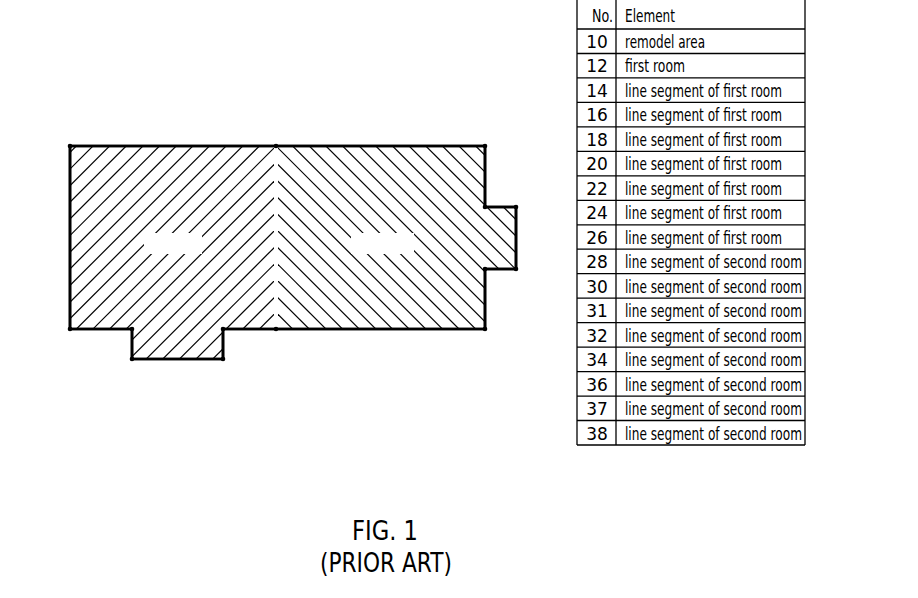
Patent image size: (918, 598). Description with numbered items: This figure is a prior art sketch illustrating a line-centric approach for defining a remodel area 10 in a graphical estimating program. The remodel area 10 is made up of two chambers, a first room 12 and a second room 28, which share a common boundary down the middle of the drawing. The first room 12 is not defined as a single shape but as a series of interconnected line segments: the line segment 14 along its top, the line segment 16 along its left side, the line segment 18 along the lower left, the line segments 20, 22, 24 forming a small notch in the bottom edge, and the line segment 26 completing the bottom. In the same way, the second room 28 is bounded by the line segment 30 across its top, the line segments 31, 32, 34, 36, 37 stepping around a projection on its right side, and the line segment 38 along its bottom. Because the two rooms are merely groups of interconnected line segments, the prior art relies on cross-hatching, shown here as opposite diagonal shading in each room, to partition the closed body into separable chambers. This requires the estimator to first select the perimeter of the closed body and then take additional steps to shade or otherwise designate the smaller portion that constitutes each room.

The remodel area 10 is at (291, 96).
The first room 12 is at (195, 114).
The line segment of first room 14 is at (113, 146).
The line segment of first room 16 is at (70, 244).
The line segment of first room 18 is at (92, 329).
The line segment of first room 20 is at (127, 342).
The line segment of first room 22 is at (177, 359).
The line segment of first room 24 is at (226, 342).
The line segment of first room 26 is at (267, 329).
The second room 28 is at (376, 114).
The line segment of second room 30 is at (437, 146).
The line segment of second room 31 is at (486, 160).
The line segment of second room 32 is at (498, 207).
The line segment of second room 34 is at (516, 250).
The line segment of second room 36 is at (503, 269).
The line segment of second room 37 is at (486, 319).
The line segment of second room 38 is at (424, 329).